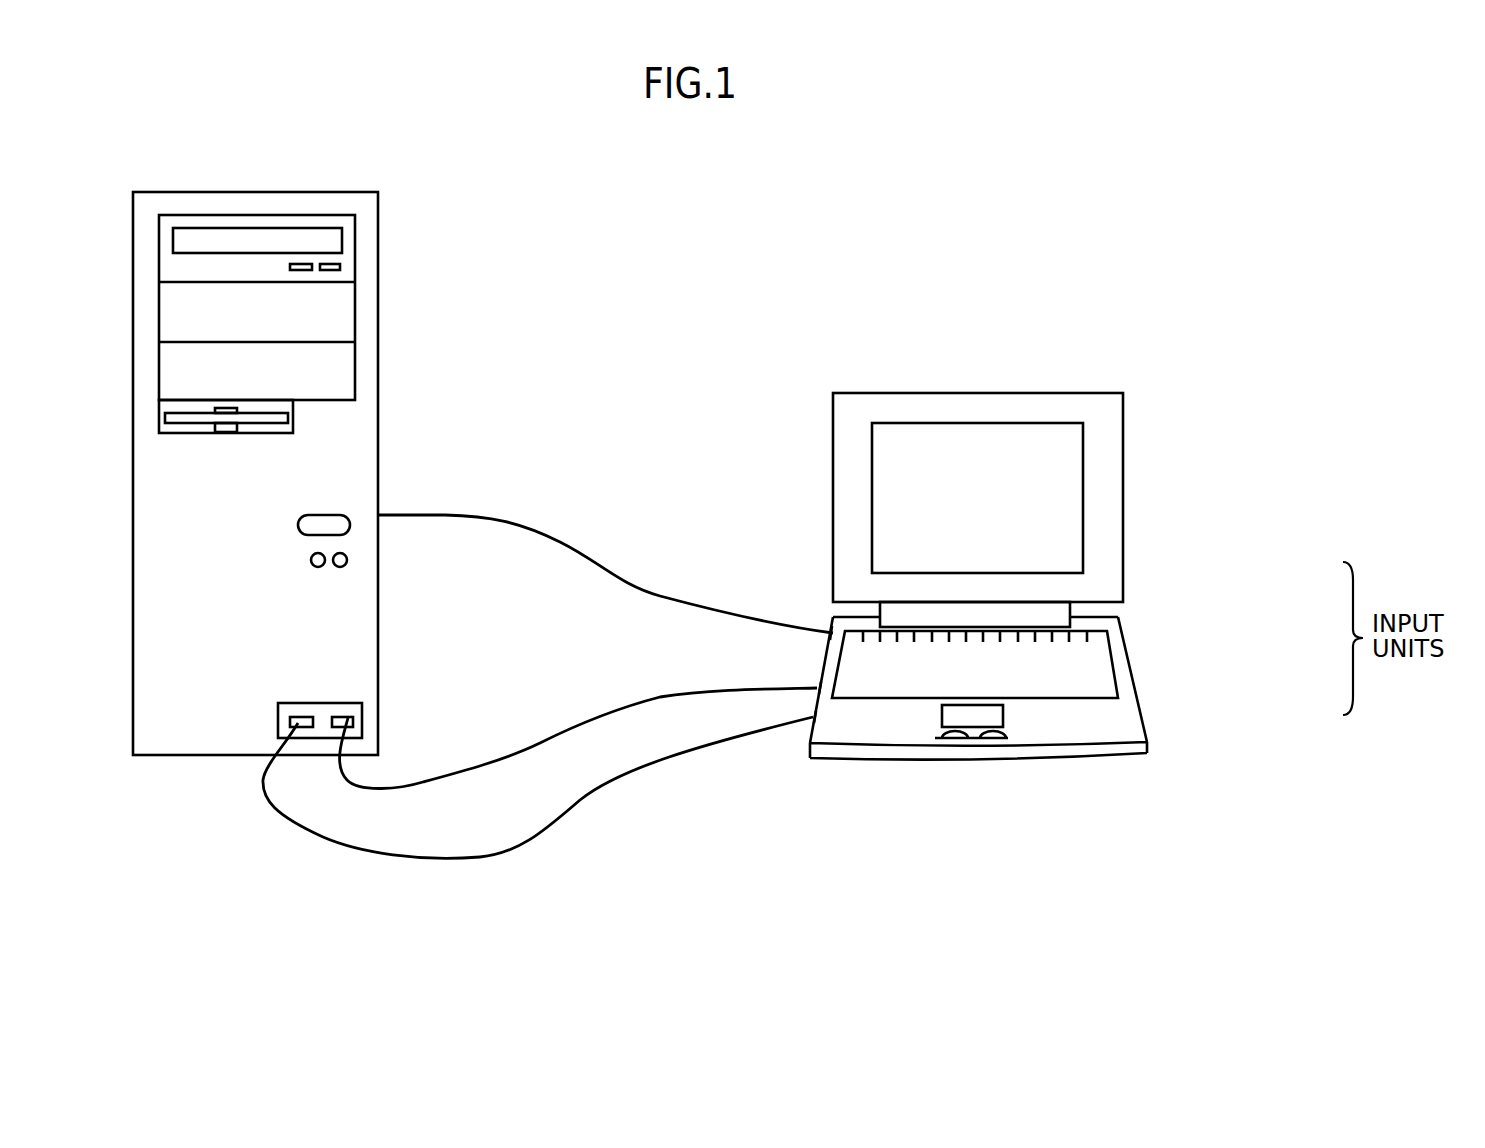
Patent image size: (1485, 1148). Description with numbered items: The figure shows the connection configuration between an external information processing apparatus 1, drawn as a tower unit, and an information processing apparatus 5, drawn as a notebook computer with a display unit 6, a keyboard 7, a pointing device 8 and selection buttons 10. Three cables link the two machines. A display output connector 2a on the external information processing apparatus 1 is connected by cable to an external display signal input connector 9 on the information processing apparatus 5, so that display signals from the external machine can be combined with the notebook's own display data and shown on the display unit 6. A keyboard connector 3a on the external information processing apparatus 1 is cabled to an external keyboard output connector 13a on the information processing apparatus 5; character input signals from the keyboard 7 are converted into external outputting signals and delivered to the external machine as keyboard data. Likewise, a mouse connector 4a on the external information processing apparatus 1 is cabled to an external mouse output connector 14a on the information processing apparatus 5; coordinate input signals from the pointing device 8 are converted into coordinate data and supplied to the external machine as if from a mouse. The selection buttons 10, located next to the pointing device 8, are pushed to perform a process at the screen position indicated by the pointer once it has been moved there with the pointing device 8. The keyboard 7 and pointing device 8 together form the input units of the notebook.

The external information processing apparatus 1 is at (378, 253).
The display output connector 2a is at (445, 482).
The keyboard connector 3a is at (305, 715).
The mouse connector 4a is at (350, 710).
The information processing apparatus 5 is at (927, 629).
The display unit 6 is at (1037, 482).
The keyboard 7 is at (1077, 665).
The pointing device 8 is at (993, 717).
The external display signal input connector 9 is at (830, 633).
The selection buttons 10 is at (960, 740).
The external keyboard output connector 13a is at (808, 722).
The external mouse output connector 14a is at (817, 688).